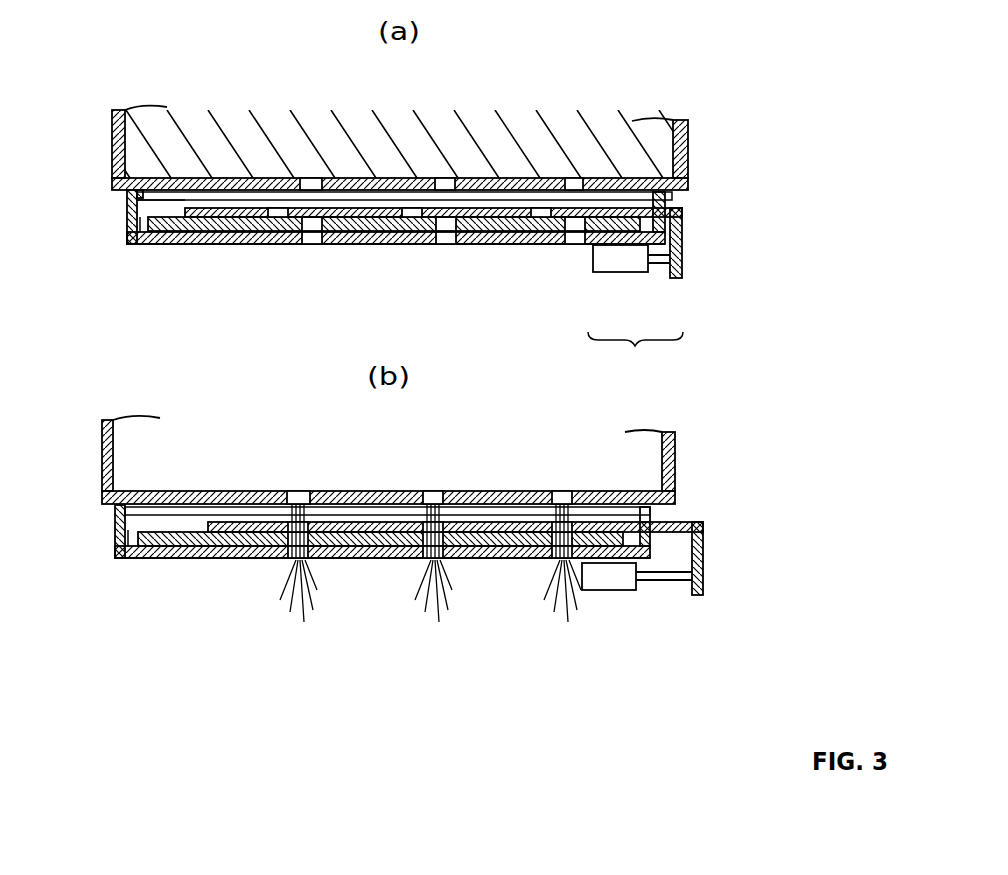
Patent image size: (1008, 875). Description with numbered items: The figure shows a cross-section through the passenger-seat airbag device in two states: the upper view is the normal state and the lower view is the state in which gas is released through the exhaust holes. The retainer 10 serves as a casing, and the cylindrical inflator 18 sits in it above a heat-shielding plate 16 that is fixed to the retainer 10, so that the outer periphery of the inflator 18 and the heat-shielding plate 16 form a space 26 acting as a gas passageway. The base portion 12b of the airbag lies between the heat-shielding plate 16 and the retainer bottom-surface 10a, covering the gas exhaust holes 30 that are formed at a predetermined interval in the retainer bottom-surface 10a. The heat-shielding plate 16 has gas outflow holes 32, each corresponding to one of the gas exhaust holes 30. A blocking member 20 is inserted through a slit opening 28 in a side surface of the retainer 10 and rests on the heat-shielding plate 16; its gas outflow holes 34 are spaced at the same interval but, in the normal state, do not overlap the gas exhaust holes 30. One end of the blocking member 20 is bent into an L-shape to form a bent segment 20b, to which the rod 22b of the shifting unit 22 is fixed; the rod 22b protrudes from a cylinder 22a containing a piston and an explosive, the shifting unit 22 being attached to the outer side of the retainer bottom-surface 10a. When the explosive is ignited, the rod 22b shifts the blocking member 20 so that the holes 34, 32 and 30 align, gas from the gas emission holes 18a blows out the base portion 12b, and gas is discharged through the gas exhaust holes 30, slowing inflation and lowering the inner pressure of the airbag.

The retainer 10 is at (120, 232).
The retainer bottom-surface 10a is at (162, 245).
The base portion 12b is at (245, 245).
The heat-shielding plate 16 is at (130, 220).
The inflator 18 is at (688, 140).
The gas emission holes 18a is at (311, 178).
The blocking member 20 is at (217, 208).
The bent segment 20b is at (682, 243).
The shifting unit 22 is at (703, 351).
The cylinder 22a is at (612, 272).
The rod 22b is at (655, 263).
The space (gas passageway) 26 is at (165, 200).
The slit opening 28 is at (665, 196).
The gas exhaust holes 30 is at (312, 245).
The gas outflow holes 32 is at (330, 245).
The gas outflow holes 34 is at (280, 208).